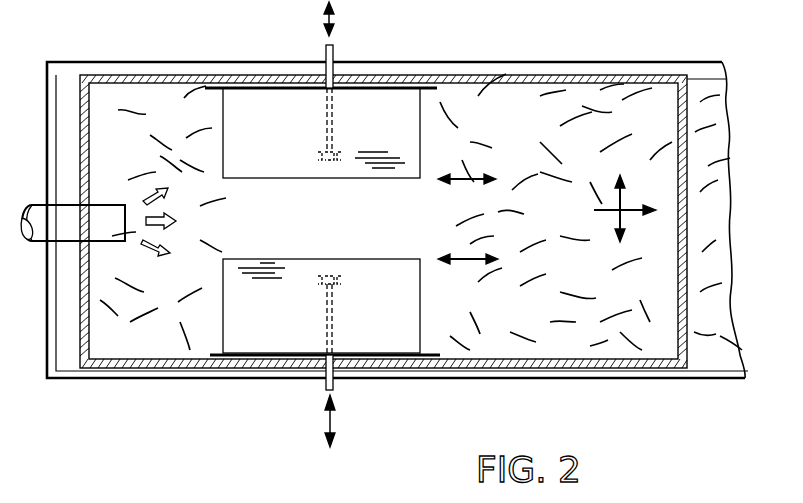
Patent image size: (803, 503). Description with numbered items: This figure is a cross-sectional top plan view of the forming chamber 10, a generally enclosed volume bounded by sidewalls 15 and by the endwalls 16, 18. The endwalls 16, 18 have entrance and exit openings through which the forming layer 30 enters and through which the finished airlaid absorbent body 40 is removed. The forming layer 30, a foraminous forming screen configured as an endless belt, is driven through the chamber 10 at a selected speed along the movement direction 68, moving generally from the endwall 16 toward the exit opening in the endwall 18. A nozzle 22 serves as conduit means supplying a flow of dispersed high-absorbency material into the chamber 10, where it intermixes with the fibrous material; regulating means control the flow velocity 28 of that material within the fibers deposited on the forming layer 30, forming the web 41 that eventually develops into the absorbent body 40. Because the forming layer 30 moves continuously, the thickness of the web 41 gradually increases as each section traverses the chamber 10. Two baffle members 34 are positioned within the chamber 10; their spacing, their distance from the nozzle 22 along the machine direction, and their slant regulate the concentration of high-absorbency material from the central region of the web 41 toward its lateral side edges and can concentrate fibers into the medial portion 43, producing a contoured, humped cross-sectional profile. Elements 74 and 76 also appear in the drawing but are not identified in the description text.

The forming chamber 10 is at (200, 356).
The sidewalls 15 is at (447, 73).
The endwall 16 is at (84, 340).
The endwall 18 is at (690, 340).
The nozzle 22 is at (104, 206).
The flow velocity 28 is at (178, 223).
The forming layer 30 is at (63, 78).
The baffle members 34 is at (274, 180).
The airlaid absorbent body 40 is at (735, 232).
The web 41 is at (604, 342).
The medial portion 43 is at (348, 236).
The movement direction 68 is at (630, 214).
The plates 74 is at (440, 91).
The rods 76 is at (333, 52).